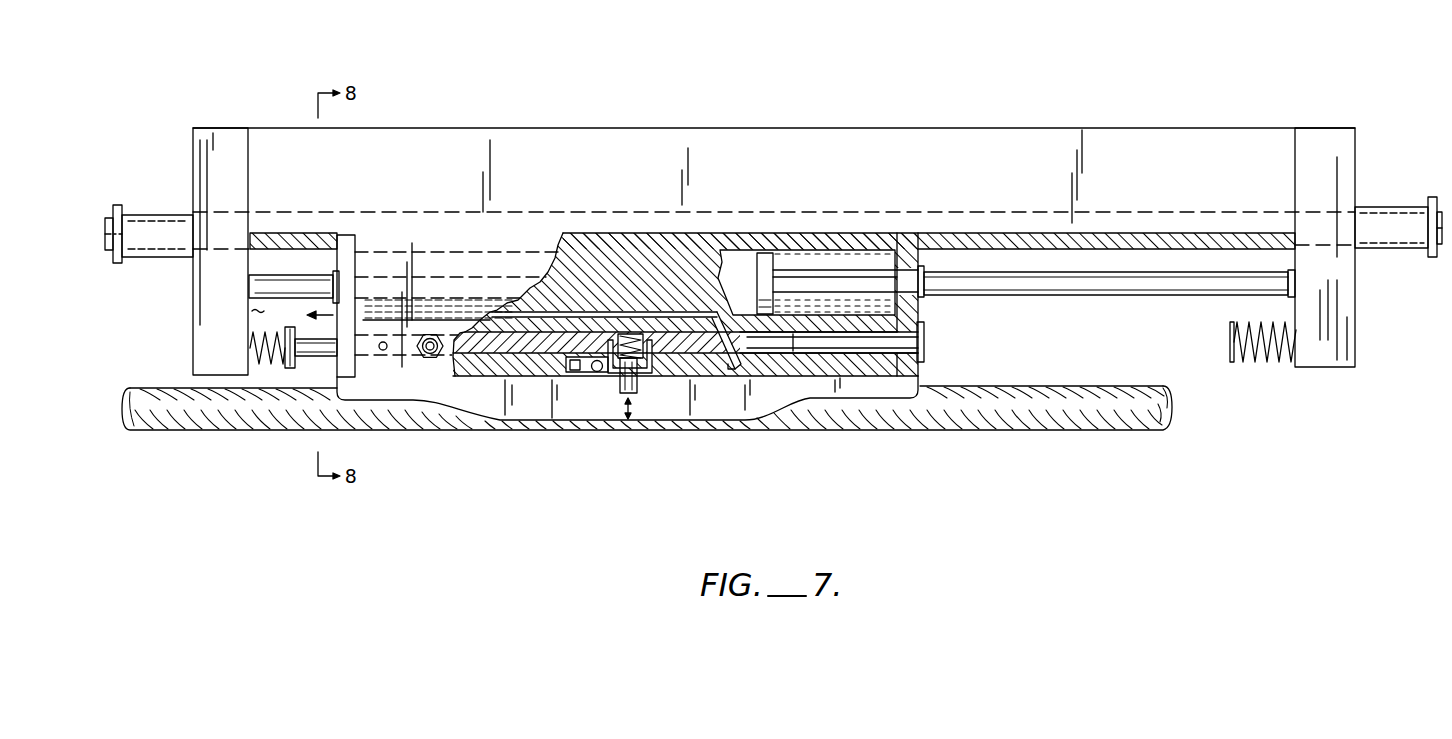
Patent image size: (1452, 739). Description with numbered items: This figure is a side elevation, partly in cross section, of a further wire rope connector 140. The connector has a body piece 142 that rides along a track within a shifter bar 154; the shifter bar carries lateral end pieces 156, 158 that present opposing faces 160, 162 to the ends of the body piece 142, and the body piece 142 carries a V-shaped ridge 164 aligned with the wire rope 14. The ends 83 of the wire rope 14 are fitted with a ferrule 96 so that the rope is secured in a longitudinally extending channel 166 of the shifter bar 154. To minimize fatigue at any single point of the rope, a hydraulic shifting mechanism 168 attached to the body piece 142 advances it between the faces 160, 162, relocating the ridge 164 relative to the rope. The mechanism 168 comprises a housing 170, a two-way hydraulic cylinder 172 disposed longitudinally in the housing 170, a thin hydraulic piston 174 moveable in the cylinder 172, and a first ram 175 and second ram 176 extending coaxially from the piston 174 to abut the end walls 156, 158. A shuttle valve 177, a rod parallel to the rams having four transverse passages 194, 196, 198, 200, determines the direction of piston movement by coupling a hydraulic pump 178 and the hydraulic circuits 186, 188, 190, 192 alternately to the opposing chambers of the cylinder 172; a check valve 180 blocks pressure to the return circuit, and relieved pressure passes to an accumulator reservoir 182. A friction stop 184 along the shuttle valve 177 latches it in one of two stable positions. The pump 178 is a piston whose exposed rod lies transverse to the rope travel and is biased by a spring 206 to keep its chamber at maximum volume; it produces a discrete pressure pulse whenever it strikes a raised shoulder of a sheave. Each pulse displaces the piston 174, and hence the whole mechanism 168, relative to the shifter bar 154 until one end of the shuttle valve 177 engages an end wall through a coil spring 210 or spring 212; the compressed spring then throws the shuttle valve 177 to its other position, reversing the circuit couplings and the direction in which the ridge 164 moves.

The wire rope 14 is at (306, 251).
The ends of the wire rope 83 is at (100, 228).
The ferrule 96 is at (172, 214).
The wire rope connector 140 is at (658, 88).
The body portion or piece 142 is at (915, 384).
The shifter bar 154 is at (501, 128).
The end piece (end wall) 156 is at (195, 338).
The end piece (end wall) 158 is at (1357, 328).
The opposing face 160 is at (292, 313).
The opposing face 162 is at (1297, 308).
The V-shaped ridge 164 is at (613, 392).
The longitudinally extending channel 166 is at (270, 210).
The hydraulic shifting mechanism 168 is at (915, 307).
The housing 170 is at (622, 240).
The two-way hydraulic cylinder 172 is at (448, 244).
The hydraulic piston 174 is at (780, 257).
The first ram 175 is at (265, 282).
The second ram 176 is at (1138, 296).
The shuttle valve 177 is at (858, 350).
The hydraulic pump 178 is at (617, 392).
The check valve 180 is at (597, 373).
The accumulator reservoir 182 is at (581, 376).
The friction stop 184 is at (428, 359).
The hydraulic circuit (input circuit) 186 is at (672, 290).
The hydraulic circuit (return circuit) 188 is at (580, 300).
The hydraulic circuit (input circuit) 190 is at (750, 378).
The hydraulic circuit (return circuit) 192 is at (717, 232).
The transverse passage 194 is at (731, 370).
The transverse passage 196 is at (552, 377).
The transverse passage 198 is at (710, 376).
The transverse passage 200 is at (497, 377).
The spring 206 is at (640, 393).
The coil spring 210 is at (1280, 362).
The spring 212 is at (250, 358).